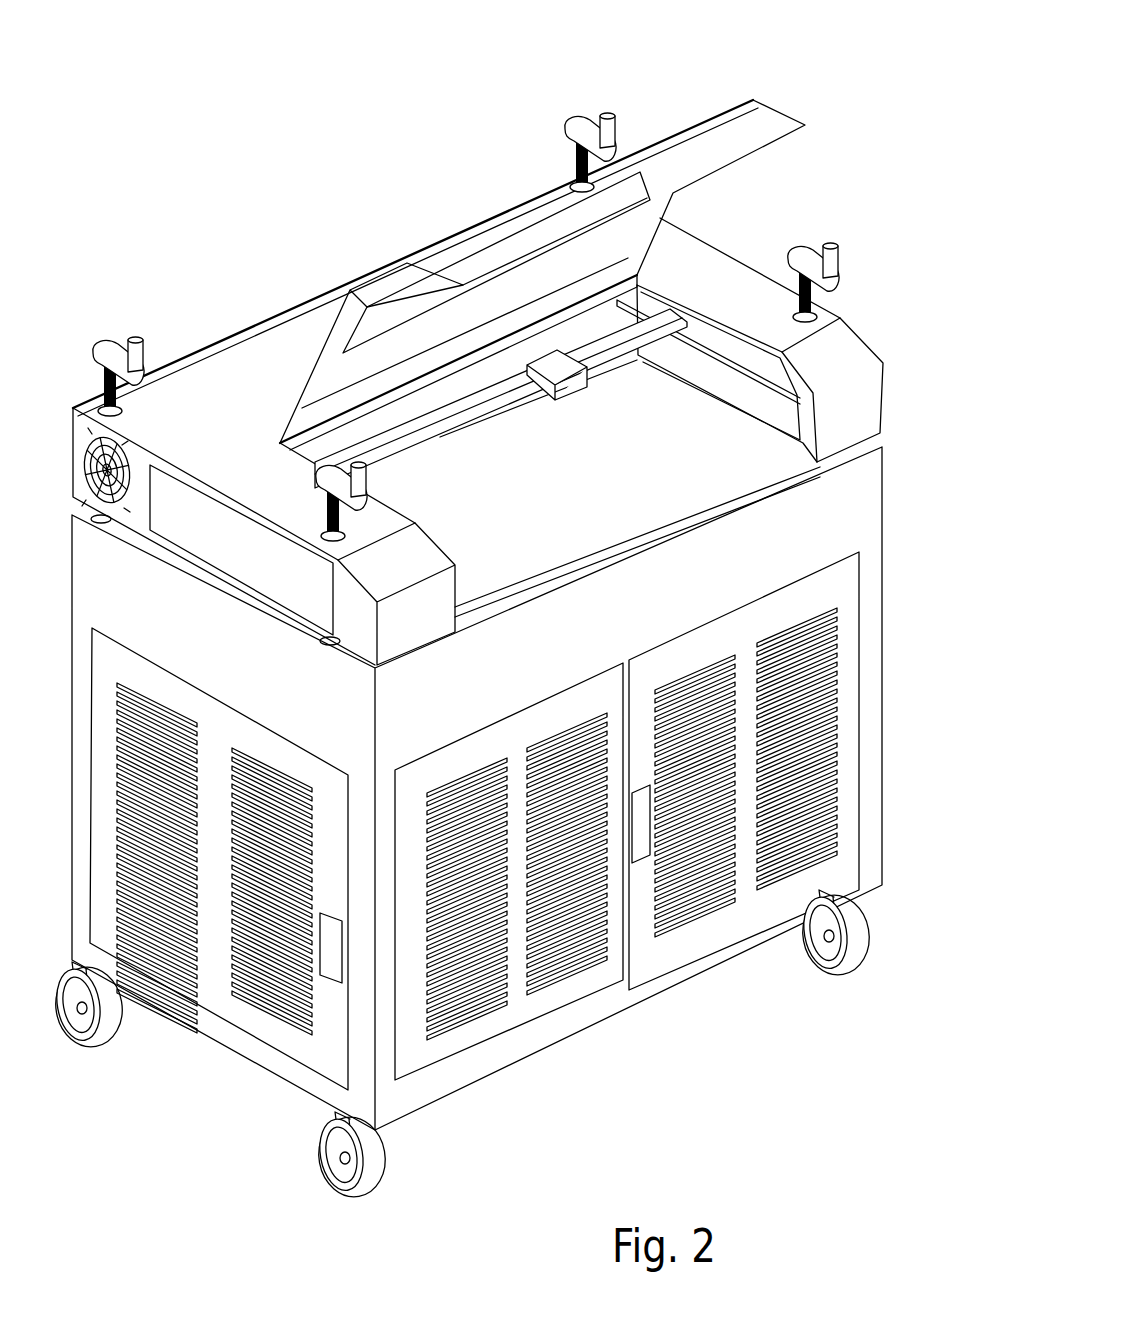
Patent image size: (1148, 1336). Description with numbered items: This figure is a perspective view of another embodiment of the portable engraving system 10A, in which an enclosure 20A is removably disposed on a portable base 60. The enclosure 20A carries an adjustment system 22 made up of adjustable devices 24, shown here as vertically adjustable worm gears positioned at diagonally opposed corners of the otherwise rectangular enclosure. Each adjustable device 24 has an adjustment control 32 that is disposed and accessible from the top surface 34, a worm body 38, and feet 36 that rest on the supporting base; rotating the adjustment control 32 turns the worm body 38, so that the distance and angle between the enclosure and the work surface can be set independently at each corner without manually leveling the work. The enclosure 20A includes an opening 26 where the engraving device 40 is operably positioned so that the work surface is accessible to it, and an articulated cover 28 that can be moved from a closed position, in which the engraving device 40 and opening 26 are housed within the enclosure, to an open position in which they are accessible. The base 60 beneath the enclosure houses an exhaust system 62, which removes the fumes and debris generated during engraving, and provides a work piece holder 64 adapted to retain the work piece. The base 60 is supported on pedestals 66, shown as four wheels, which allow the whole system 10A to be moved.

The portable engraving system 10A is at (386, 220).
The enclosure 20A is at (262, 310).
The adjustment system 22 is at (856, 299).
The adjustable devices 24 is at (112, 338).
The opening 26 is at (610, 451).
The cover 28 is at (776, 103).
The adjustment control 32 is at (830, 270).
The top surface 34 is at (745, 288).
The feet 36 is at (327, 652).
The worm body 38 is at (797, 306).
The engraving device 40 is at (572, 388).
The portable base 60 is at (887, 518).
The exhaust system 62 is at (820, 758).
The work piece holder 64 is at (597, 517).
The pedestals 66 is at (832, 962).